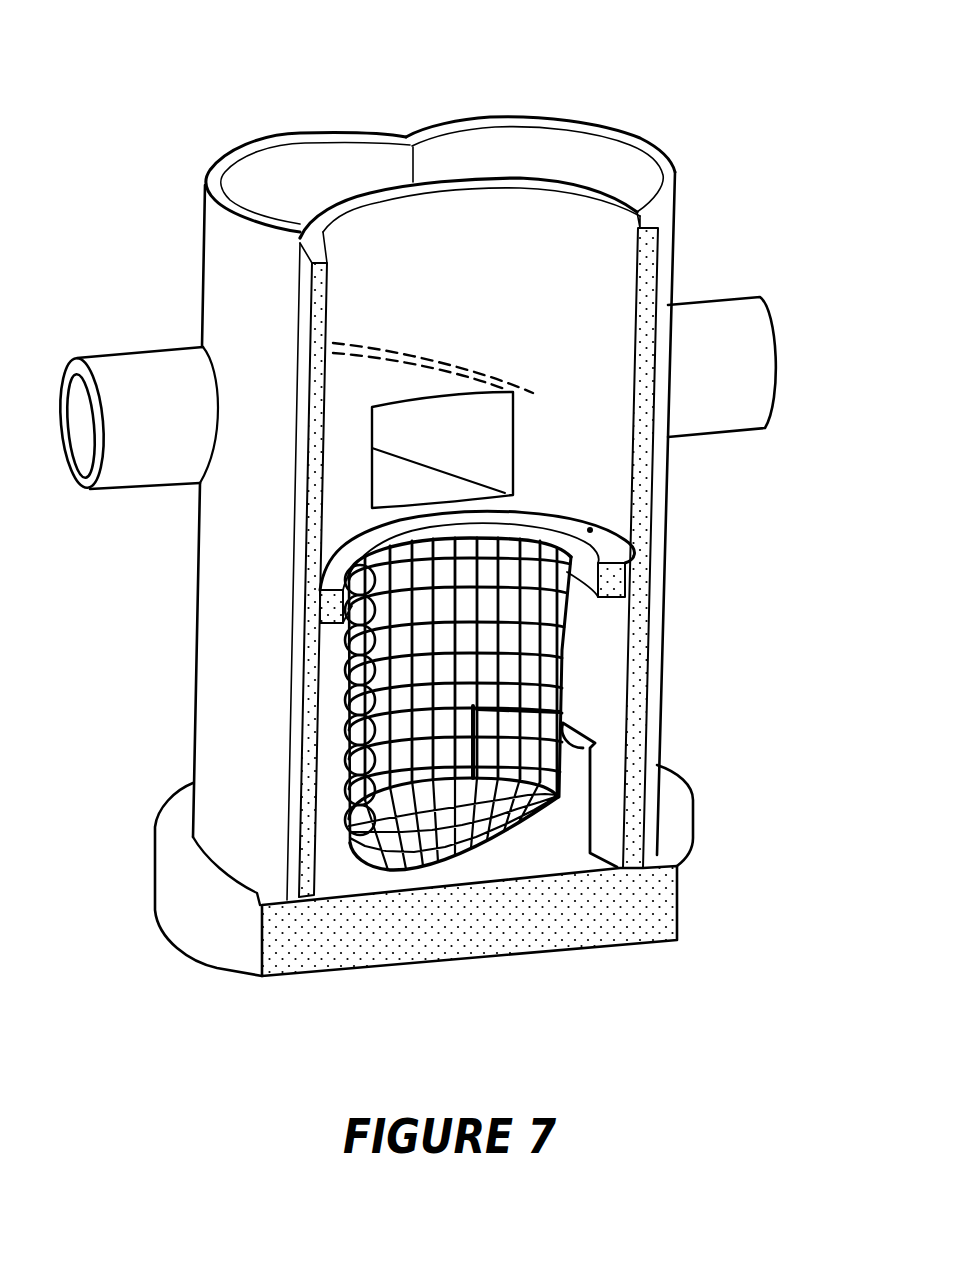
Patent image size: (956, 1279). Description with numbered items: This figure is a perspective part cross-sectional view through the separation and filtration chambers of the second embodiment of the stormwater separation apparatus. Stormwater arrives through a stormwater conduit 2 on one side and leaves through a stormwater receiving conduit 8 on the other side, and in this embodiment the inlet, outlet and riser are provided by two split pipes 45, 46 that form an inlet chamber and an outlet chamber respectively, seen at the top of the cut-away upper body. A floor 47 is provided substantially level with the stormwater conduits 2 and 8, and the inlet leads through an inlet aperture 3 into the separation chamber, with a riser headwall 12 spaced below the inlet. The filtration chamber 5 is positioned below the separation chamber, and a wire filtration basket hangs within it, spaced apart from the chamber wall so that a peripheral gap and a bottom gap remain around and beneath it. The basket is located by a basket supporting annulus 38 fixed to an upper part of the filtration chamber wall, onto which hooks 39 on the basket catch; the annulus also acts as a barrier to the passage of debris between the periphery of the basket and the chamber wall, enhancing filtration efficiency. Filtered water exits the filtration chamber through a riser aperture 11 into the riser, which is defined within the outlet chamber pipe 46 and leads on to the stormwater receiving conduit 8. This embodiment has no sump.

The stormwater conduit 2 is at (143, 377).
The inlet aperture 3 is at (480, 457).
The filtration chamber 5 is at (352, 862).
The stormwater receiving conduit 8 is at (723, 343).
The riser aperture 11 is at (565, 795).
The riser headwall 12 is at (591, 755).
The basket supporting annulus 38 is at (612, 583).
The hooks 39 is at (583, 524).
The inlet chamber split pipe 45 is at (291, 137).
The outlet chamber split pipe 46 is at (590, 131).
The floor 47 is at (408, 480).